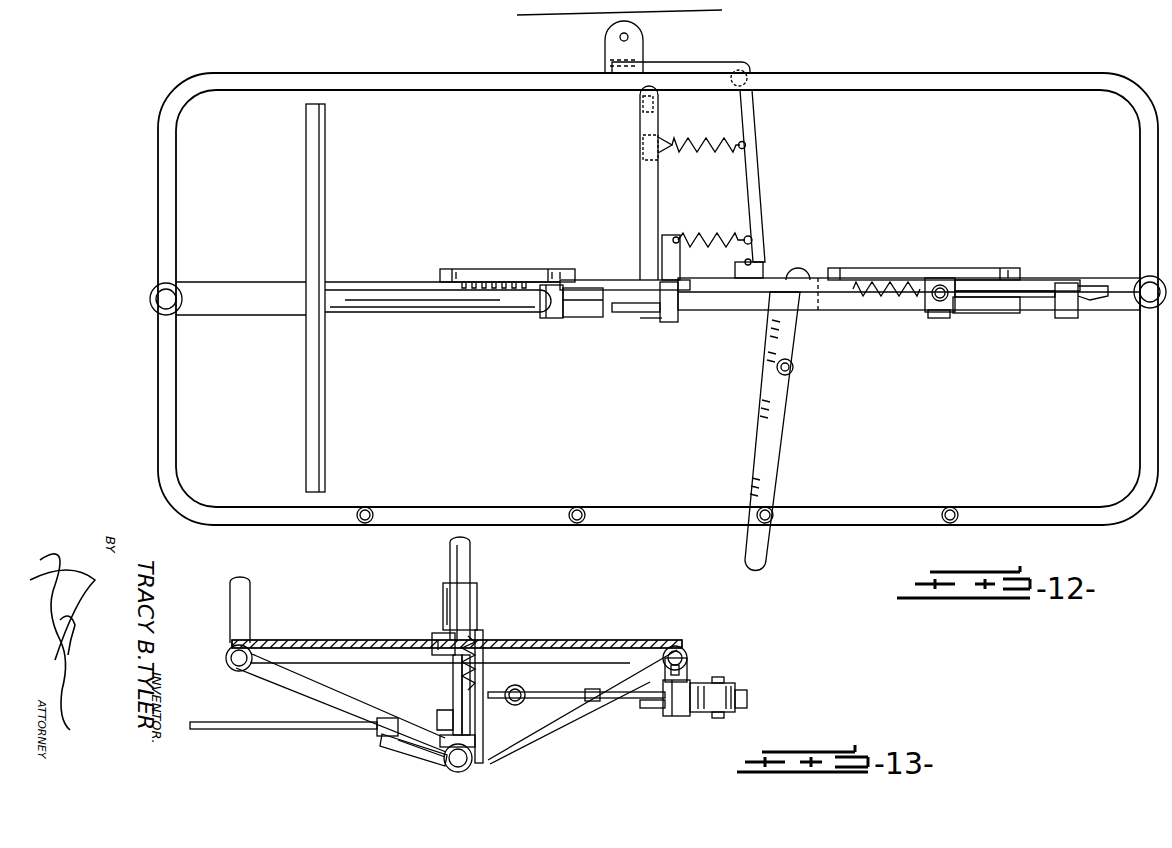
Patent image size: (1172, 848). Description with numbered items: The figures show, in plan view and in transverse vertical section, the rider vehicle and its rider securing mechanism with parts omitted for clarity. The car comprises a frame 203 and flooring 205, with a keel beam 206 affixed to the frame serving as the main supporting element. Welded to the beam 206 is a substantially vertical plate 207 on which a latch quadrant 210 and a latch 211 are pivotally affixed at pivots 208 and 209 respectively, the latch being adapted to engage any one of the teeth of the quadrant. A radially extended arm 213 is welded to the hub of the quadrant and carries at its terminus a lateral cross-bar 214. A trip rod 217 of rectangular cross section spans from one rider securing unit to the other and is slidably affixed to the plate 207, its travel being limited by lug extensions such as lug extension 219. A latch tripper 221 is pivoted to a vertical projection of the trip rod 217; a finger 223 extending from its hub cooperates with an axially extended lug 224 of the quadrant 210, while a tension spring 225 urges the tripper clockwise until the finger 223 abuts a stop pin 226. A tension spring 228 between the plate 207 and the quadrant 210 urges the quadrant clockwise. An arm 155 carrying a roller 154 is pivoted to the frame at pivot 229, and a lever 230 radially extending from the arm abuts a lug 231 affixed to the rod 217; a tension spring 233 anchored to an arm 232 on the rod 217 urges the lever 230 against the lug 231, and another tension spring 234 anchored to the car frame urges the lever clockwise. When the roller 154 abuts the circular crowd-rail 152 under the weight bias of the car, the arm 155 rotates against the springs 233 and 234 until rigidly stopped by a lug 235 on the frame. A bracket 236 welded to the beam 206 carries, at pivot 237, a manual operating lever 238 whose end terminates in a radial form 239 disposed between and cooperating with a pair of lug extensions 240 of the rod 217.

In FIG. 12, the circular crowd-rail 152 is at (545, 17).
In FIG. 12, the roller 154 is at (645, 38).
In FIG. 13, the roller 154 is at (748, 699).
In FIG. 12, the arm 155 is at (698, 63).
In FIG. 13, the arm 155 is at (700, 686).
In FIG. 12, the frame 203 is at (150, 304).
In FIG. 13, the frame 203 is at (443, 592).
In FIG. 13, the flooring 205 is at (600, 640).
In FIG. 12, the keel beam 206 is at (275, 318).
In FIG. 13, the keel beam 206 is at (466, 768).
In FIG. 12, the vertical plate 207 is at (485, 268).
In FIG. 12, the pivot 208 is at (540, 318).
In FIG. 13, the pivot 209 is at (418, 744).
In FIG. 12, the latch quadrant 210 is at (562, 318).
In FIG. 12, the latch 211 is at (612, 272).
In FIG. 13, the latch 211 is at (455, 698).
In FIG. 12, the radially extended arm 213 is at (382, 314).
In FIG. 13, the radially extended arm 213 is at (470, 560).
In FIG. 12, the lateral cross-bar 214 is at (326, 380).
In FIG. 12, the trip rod 217 is at (760, 292).
In FIG. 12, the lug extension 219 is at (672, 322).
In FIG. 13, the lug extension 219 is at (432, 641).
In FIG. 13, the latch tripper 221 is at (456, 666).
In FIG. 12, the finger 223 is at (625, 312).
In FIG. 12, the axially extended lug 224 is at (585, 318).
In FIG. 13, the tension spring 225 is at (480, 650).
In FIG. 12, the stop pin 226 is at (660, 322).
In FIG. 12, the tension spring 228 is at (890, 300).
In FIG. 12, the pivot 229 is at (752, 73).
In FIG. 13, the pivot 229 is at (690, 717).
In FIG. 12, the lever 230 is at (757, 157).
In FIG. 13, the lever 230 is at (587, 700).
In FIG. 12, the lug 231 is at (762, 262).
In FIG. 13, the lug 231 is at (512, 690).
In FIG. 12, the arm 232 is at (668, 250).
In FIG. 12, the tension spring 233 is at (708, 236).
In FIG. 13, the tension spring 233 is at (520, 705).
In FIG. 12, the tension spring 234 is at (706, 142).
In FIG. 13, the tension spring 234 is at (640, 705).
In FIG. 12, the lug 235 is at (643, 104).
In FIG. 13, the lug 235 is at (650, 710).
In FIG. 13, the bracket 236 is at (398, 748).
In FIG. 12, the pivot 237 is at (795, 370).
In FIG. 13, the pivot 237 is at (378, 736).
In FIG. 12, the manual operating lever 238 is at (775, 452).
In FIG. 13, the manual operating lever 238 is at (256, 731).
In FIG. 12, the radial form 239 is at (797, 270).
In FIG. 12, the lug extensions 240 is at (812, 305).